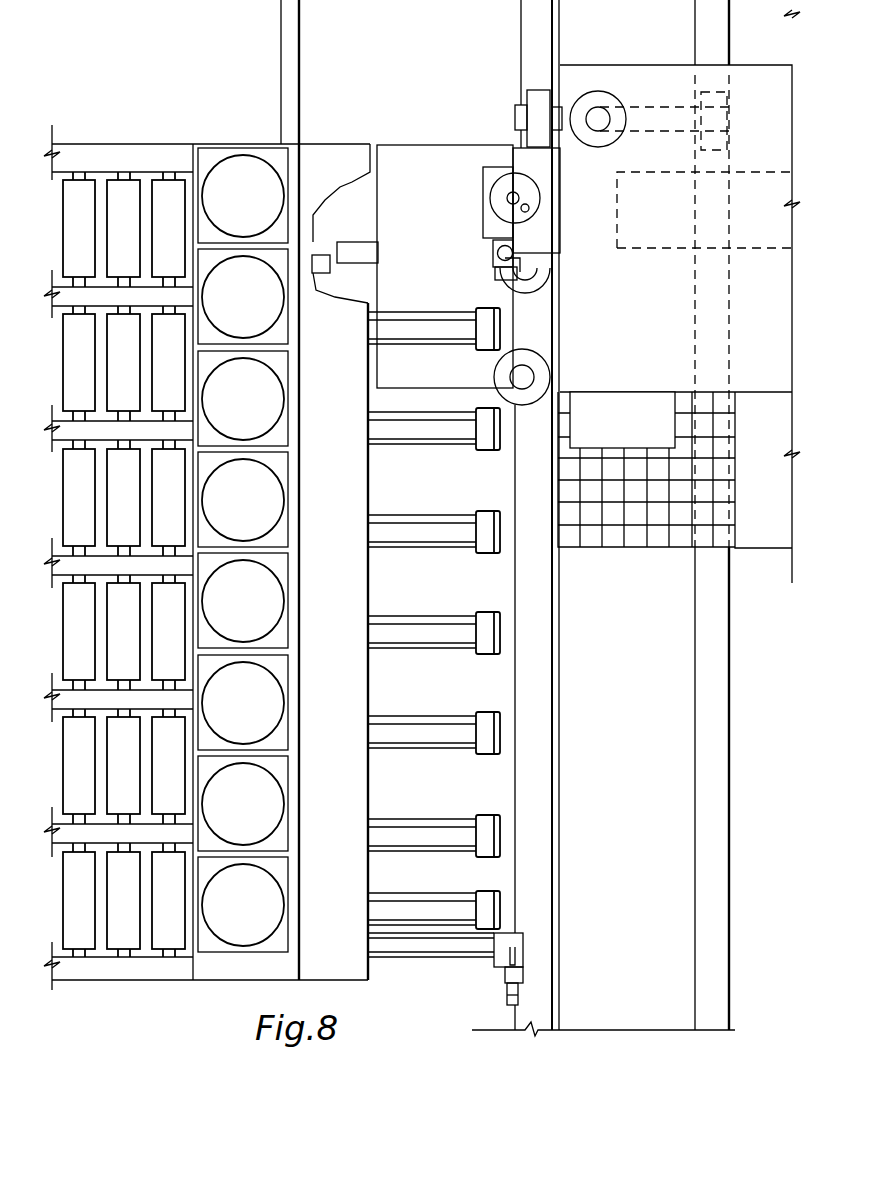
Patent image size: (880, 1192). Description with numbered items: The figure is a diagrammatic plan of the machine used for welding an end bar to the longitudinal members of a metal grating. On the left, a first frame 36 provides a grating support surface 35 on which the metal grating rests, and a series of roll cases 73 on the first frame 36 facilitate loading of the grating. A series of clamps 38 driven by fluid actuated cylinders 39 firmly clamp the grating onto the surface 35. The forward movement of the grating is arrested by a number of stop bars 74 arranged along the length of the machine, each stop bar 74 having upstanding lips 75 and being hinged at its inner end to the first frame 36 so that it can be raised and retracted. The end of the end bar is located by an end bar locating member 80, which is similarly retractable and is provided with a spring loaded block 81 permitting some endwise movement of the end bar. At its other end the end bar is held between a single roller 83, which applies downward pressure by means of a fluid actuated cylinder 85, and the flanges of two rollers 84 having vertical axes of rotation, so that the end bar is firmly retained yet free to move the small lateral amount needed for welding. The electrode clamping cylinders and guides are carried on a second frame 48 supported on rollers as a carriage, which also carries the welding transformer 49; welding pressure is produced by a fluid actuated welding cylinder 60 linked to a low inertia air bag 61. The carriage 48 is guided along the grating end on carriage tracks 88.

The grating support surface 35 is at (340, 474).
The first frame 36 is at (108, 141).
The clamps 38 is at (288, 255).
The fluid actuated cylinders 39 is at (235, 290).
The second frame 48 is at (672, 302).
The welding transformer 49 is at (630, 192).
The fluid actuated welding cylinder 60 is at (602, 115).
The air bag 61 is at (590, 95).
The roll cases 73 is at (85, 777).
The stop bars 74 is at (441, 535).
The upstanding lips 75 is at (487, 618).
The end bar locating member 80 is at (425, 948).
The spring loaded block 81 is at (517, 968).
The roller 83 is at (503, 273).
The rollers 84 is at (540, 280).
The fluid actuated cylinder 85 is at (497, 255).
The carriage tracks 88 is at (690, 765).